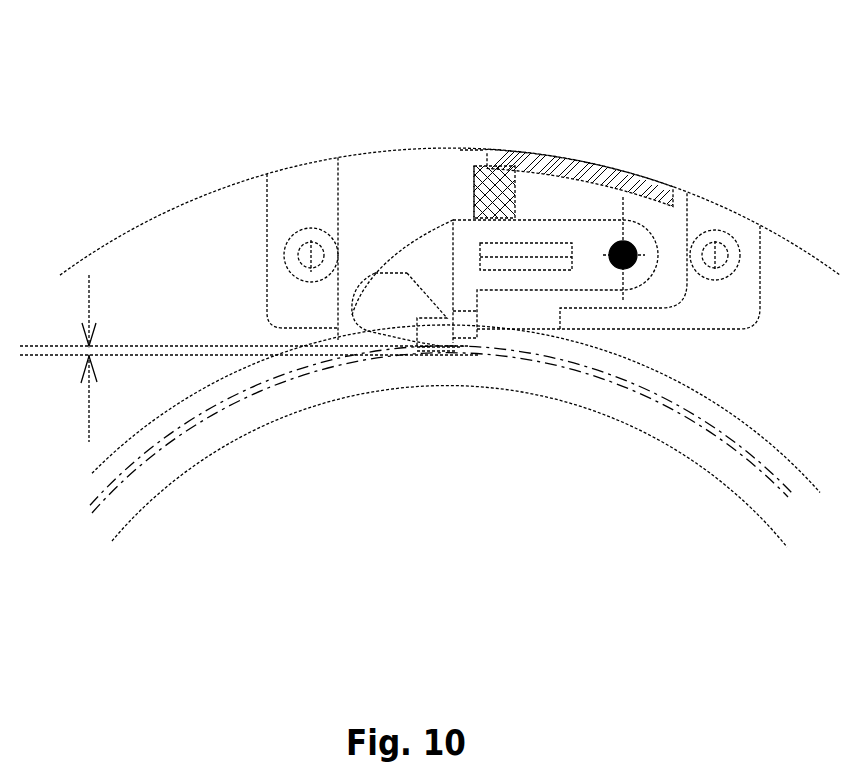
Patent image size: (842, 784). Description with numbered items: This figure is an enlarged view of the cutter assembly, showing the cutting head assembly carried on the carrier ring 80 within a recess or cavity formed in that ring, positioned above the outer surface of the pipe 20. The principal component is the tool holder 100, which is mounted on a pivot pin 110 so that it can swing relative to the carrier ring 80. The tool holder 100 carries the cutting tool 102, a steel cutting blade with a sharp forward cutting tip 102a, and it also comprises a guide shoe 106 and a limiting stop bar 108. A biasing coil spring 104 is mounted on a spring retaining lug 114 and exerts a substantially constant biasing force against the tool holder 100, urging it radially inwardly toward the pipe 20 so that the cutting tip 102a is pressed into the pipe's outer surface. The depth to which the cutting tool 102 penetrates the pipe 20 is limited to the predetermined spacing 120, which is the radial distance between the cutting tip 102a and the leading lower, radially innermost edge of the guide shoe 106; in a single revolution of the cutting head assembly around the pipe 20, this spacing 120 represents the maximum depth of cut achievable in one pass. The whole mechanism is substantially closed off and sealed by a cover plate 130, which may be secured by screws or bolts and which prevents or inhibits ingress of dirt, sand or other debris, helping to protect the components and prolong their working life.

The carrier ring 80 is at (178, 296).
The pipe 20 is at (268, 402).
The predetermined spacing 120 is at (89, 442).
The guide shoe 106 is at (410, 337).
The limiting stop bar 108 is at (430, 305).
The tool holder 100 is at (535, 238).
The pivot pin 110 is at (645, 236).
The biasing coil spring 104 is at (516, 158).
The spring retaining lug 114 is at (480, 168).
The cover plate 130 is at (573, 165).
The cutting tool 102 is at (459, 336).
The cutting tip 102a is at (452, 345).